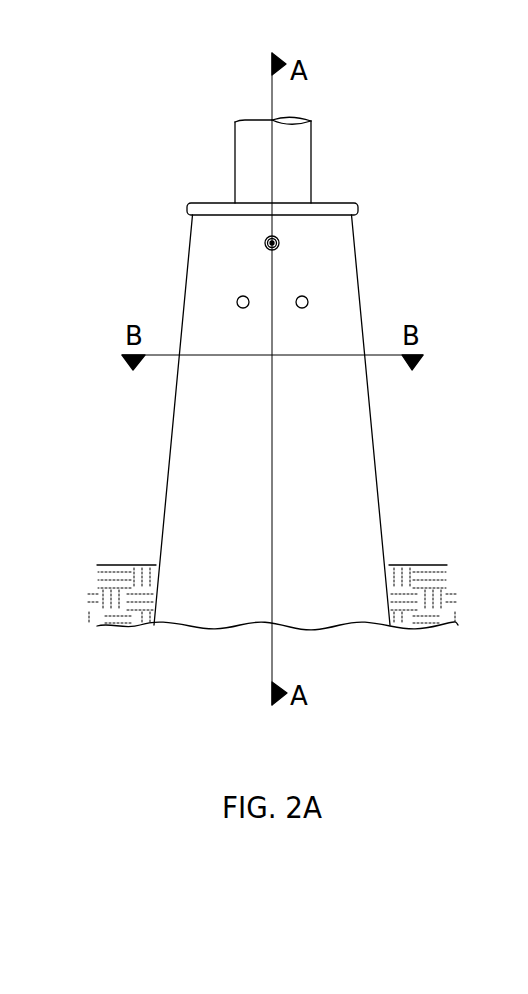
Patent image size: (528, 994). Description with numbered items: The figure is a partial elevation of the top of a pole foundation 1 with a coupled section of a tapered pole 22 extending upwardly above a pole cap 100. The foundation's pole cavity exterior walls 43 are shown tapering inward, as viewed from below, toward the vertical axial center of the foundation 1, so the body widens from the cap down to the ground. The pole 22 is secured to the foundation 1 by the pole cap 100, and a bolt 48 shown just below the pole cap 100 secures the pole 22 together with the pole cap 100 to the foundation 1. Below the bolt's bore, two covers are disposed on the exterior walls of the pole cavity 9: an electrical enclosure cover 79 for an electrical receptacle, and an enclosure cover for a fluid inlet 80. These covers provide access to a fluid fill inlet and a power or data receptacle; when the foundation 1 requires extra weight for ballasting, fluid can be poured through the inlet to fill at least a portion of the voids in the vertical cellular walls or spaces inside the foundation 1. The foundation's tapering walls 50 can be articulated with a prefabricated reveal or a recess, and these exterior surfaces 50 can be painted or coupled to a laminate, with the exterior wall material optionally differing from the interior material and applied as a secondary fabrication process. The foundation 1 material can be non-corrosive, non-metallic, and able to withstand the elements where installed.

The foundation 1 is at (261, 420).
The pole cavity 9 is at (142, 420).
The tapering walls 50 is at (202, 470).
The pole cavity exterior walls 43 is at (345, 470).
The pole cap 100 is at (208, 203).
The tapered pole 22 is at (311, 162).
The bolt 48 is at (280, 243).
The electrical enclosure cover 79 is at (237, 302).
The enclosure cover for fluid inlet 80 is at (308, 302).